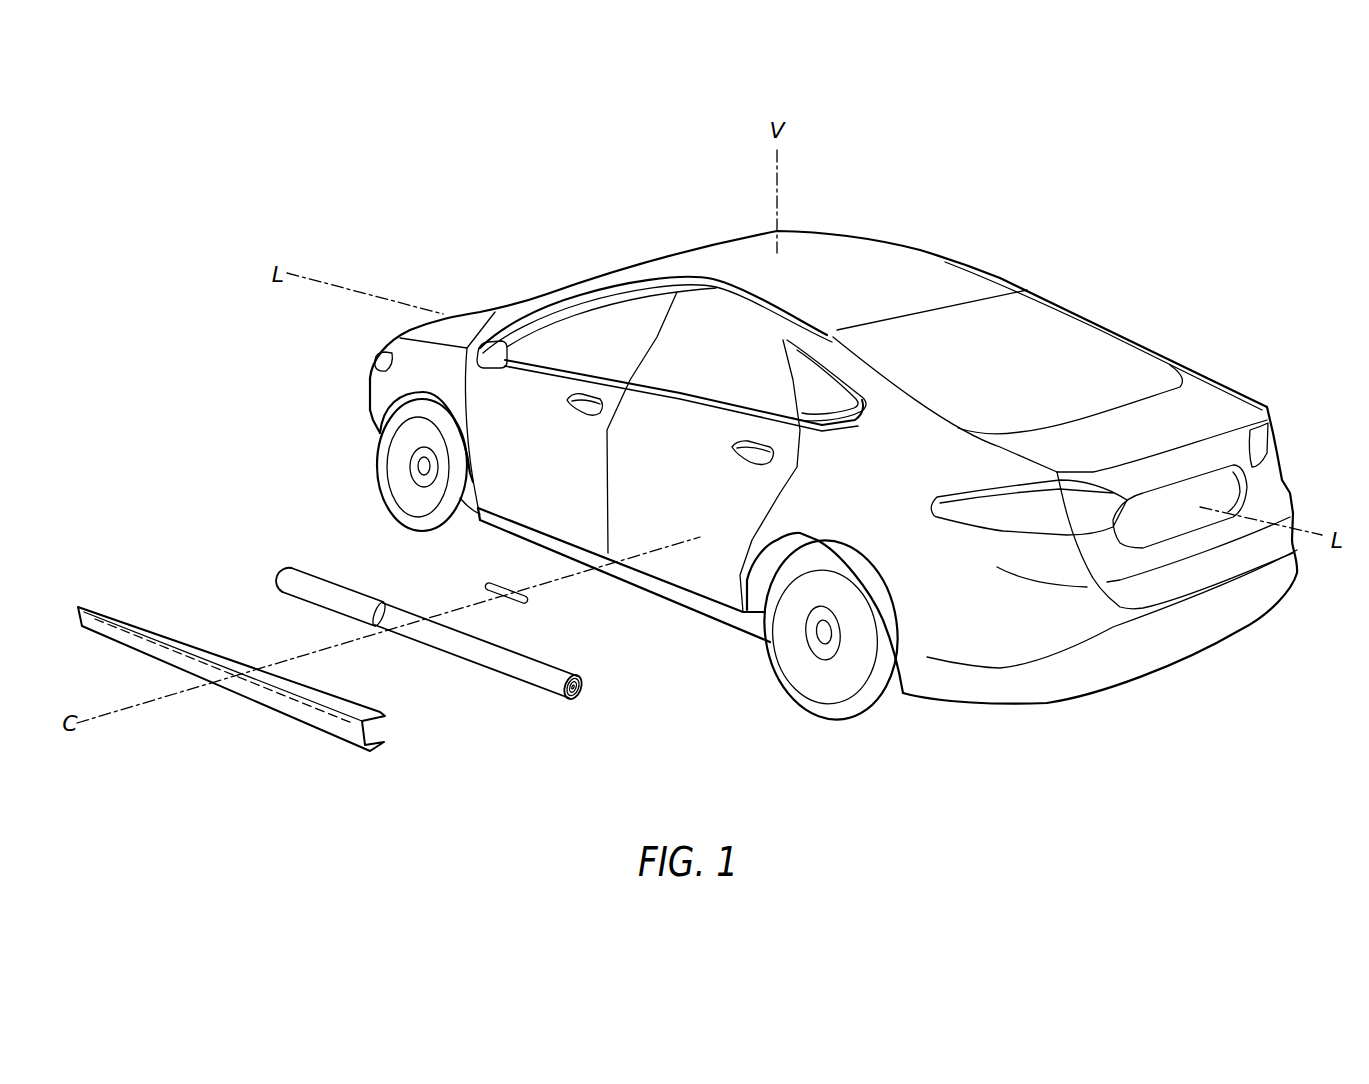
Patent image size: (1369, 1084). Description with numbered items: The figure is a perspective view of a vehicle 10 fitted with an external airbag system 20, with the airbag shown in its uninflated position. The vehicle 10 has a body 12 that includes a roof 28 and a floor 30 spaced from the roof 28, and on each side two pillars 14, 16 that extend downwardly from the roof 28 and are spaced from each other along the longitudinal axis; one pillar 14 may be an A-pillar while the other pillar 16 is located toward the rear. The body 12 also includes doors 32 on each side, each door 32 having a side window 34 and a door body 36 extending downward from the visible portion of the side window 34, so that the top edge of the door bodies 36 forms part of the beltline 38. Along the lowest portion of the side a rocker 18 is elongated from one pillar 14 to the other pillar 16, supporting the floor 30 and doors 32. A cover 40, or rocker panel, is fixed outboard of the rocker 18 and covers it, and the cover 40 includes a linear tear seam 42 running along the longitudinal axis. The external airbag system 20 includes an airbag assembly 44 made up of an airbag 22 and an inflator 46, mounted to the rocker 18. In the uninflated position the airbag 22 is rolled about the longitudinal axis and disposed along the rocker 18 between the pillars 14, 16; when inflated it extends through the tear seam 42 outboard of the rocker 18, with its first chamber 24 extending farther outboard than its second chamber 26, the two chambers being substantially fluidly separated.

The vehicle 10 is at (1171, 243).
The body 12 is at (1221, 374).
The pillar 14 is at (513, 318).
The pillar 16 is at (790, 494).
The rocker 18 is at (733, 613).
The external airbag system 20 is at (212, 445).
The airbag 22 is at (504, 706).
The first chamber 24 is at (322, 572).
The second chamber 26 is at (466, 668).
The roof 28 is at (847, 293).
The floor 30 is at (691, 588).
The door 32 is at (609, 372).
The side window 34 is at (569, 353).
The door body 36 is at (527, 481).
The beltline 38 is at (557, 378).
The cover 40 is at (343, 740).
The tear seam 42 is at (283, 712).
The airbag assembly 44 is at (614, 668).
The inflator 46 is at (527, 600).